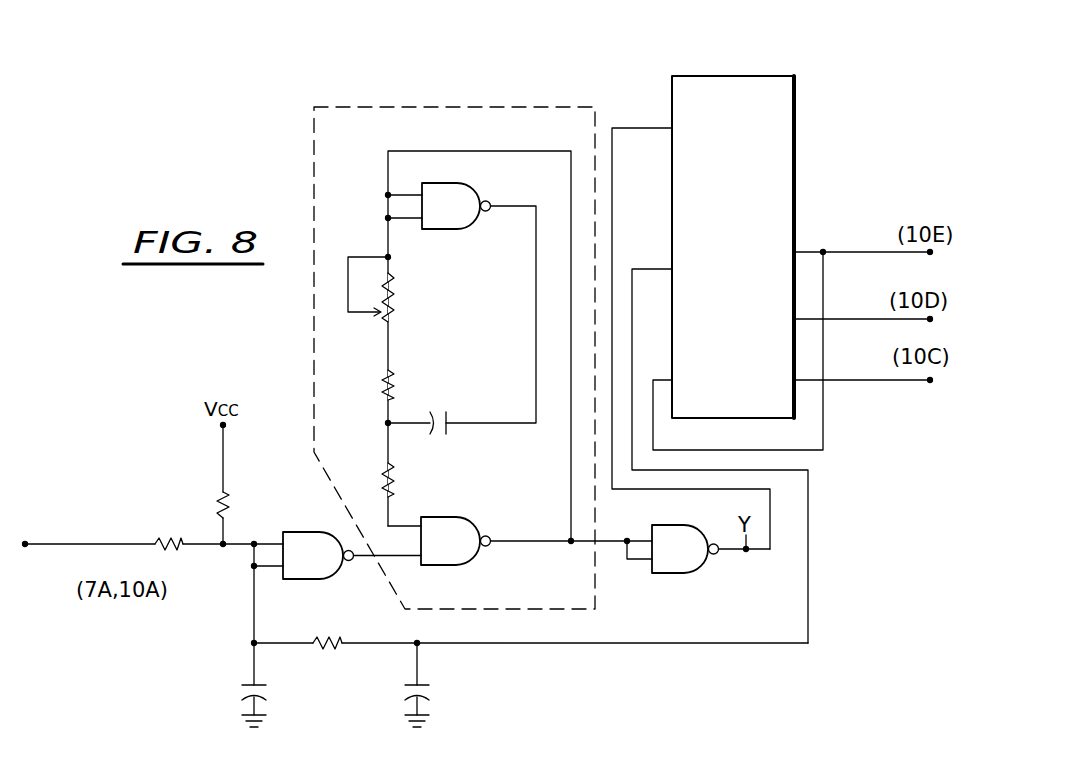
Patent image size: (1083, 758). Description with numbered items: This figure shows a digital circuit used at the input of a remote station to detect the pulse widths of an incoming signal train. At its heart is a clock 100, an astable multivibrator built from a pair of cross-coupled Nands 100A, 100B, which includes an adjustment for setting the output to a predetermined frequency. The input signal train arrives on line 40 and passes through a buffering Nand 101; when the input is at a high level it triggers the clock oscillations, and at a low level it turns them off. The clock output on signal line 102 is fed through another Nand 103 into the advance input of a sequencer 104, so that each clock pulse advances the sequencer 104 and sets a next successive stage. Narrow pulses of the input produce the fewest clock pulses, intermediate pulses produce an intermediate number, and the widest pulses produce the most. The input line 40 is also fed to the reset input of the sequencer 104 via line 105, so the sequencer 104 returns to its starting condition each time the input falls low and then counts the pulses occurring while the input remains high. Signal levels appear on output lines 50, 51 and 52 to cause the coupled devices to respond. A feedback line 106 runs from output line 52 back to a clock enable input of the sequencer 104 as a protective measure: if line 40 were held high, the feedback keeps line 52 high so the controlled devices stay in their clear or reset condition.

The input signal train line 40 is at (78, 547).
The output line 50 is at (853, 382).
The output line 51 is at (880, 318).
The output line 52 is at (845, 243).
The clock 100 is at (417, 363).
The Nand 100A is at (459, 230).
The Nand 100B is at (473, 520).
The buffering Nand 101 is at (313, 531).
The signal line 102 is at (612, 544).
The Nand 103 is at (694, 574).
The sequencer 104 is at (797, 117).
The line 105 is at (810, 548).
The feedback line 106 is at (828, 438).